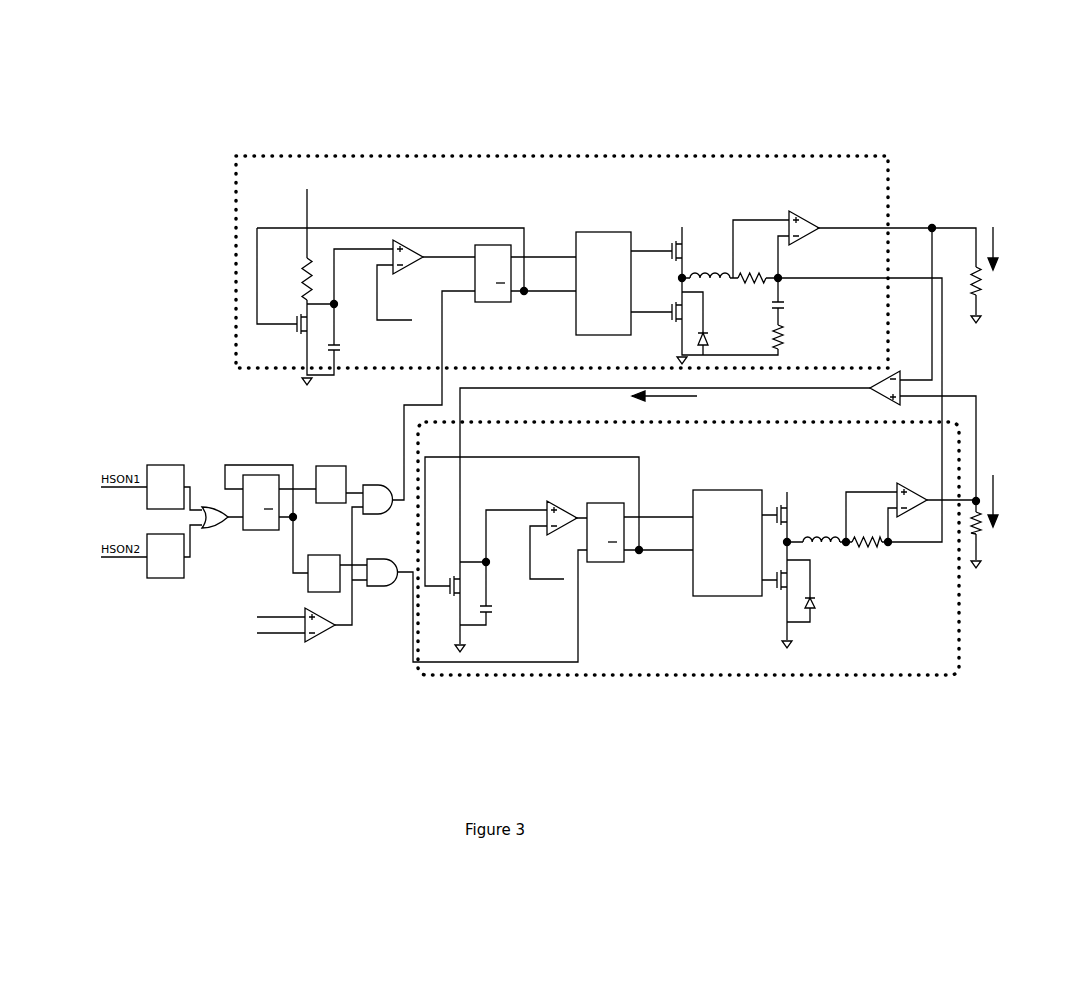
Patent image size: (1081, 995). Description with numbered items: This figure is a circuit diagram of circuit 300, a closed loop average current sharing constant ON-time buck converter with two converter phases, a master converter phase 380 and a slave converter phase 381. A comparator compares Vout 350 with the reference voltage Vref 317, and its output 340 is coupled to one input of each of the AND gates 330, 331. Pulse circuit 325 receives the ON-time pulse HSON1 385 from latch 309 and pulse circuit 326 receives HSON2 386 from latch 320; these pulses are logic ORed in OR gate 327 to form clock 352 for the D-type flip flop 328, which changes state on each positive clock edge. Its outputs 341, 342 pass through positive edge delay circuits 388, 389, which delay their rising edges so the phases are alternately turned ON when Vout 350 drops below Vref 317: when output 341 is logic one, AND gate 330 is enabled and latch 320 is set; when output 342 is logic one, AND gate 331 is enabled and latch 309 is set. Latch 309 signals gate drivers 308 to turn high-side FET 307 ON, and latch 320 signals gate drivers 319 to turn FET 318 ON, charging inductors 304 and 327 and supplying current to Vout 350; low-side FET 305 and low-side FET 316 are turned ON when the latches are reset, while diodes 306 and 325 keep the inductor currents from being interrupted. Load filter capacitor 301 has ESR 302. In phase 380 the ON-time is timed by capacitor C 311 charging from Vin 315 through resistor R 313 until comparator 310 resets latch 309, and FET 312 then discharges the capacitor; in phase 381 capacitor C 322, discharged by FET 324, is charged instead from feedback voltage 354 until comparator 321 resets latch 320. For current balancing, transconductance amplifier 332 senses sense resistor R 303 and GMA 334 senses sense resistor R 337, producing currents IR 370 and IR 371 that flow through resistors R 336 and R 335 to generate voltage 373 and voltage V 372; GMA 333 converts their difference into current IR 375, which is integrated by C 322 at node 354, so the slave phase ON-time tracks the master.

The circuit 300 is at (575, 100).
The load filter capacitor 301 is at (790, 310).
The ESR 302 is at (790, 344).
The sense resistor R 303 is at (751, 292).
The inductor 304 is at (704, 269).
The low-side FET 305 is at (672, 320).
The diode 306 is at (710, 336).
The high-side FET 307 is at (666, 265).
The gate drivers 308 is at (604, 237).
The latch 309 is at (488, 243).
The comparator 310 is at (412, 246).
The capacitor C 311 is at (338, 347).
The FET 312 is at (298, 318).
The resistor R 313 is at (307, 262).
The Vin 315 is at (322, 178).
The low-side FET 316 is at (778, 597).
The Vref 317 is at (397, 319).
The FET 318 is at (791, 518).
The gate drivers 319 is at (727, 598).
The latch 320 is at (613, 562).
The comparator 321 is at (567, 507).
The capacitor C 322 is at (502, 607).
The FET 324 is at (456, 578).
The pulse circuit 325 is at (165, 463).
The pulse circuit 326 is at (168, 580).
The OR gate 327 is at (217, 529).
The flip flop 328 is at (257, 473).
The AND gate 330 is at (369, 483).
The AND gate 331 is at (380, 589).
The transconductance amplifier 332 is at (801, 212).
The transconductance amplifier 333 is at (880, 392).
The transconductance amplifier 334 is at (905, 487).
The resistor R 335 is at (982, 528).
The resistor R 336 is at (978, 296).
The sense resistor R 337 is at (872, 553).
The output of comparator 340 is at (345, 624).
The output 341 is at (350, 473).
The output 342 is at (359, 560).
The Vout 350 is at (880, 278).
The clock 352 is at (235, 510).
The feedback voltage 354 is at (517, 389).
The current IR 370 is at (1003, 253).
The current IR 371 is at (997, 492).
The voltage V 372 is at (958, 227).
The voltage 373 is at (977, 472).
The current IR 375 is at (692, 397).
The converter phase 380 is at (698, 155).
The converter phase 381 is at (960, 610).
The HSON1 385 is at (551, 240).
The HSON2 386 is at (665, 498).
The positive edge delay circuit 388 is at (316, 465).
The positive edge delay circuit 389 is at (320, 553).